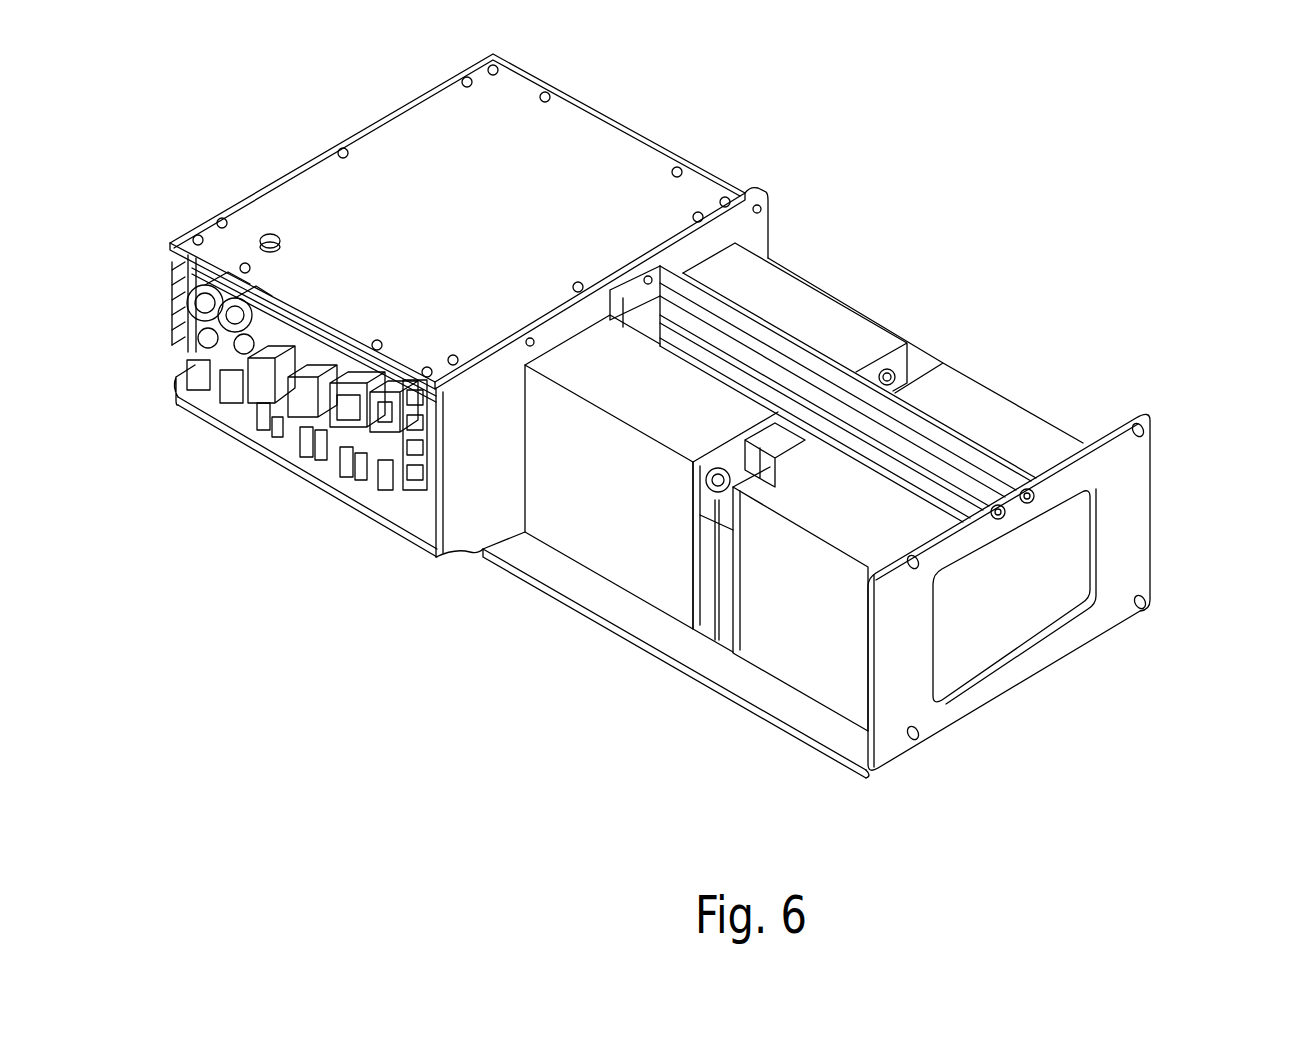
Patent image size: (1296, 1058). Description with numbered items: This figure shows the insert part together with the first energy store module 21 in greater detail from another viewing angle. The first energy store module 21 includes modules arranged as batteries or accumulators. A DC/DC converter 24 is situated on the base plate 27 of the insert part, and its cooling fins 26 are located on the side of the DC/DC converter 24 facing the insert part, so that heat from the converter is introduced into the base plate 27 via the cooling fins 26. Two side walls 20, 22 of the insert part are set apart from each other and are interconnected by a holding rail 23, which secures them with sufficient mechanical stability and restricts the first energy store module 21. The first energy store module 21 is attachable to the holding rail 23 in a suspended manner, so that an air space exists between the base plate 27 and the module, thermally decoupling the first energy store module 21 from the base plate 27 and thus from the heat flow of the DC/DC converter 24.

The side wall of the insert part 20 is at (1130, 494).
The first energy store module 21 is at (613, 516).
The side wall of the insert part 22 is at (473, 492).
The holding rail 23 is at (770, 335).
The DC/DC converter 24 is at (490, 228).
The cooling fins 26 is at (287, 428).
The base plate of the insert part 27 is at (395, 503).